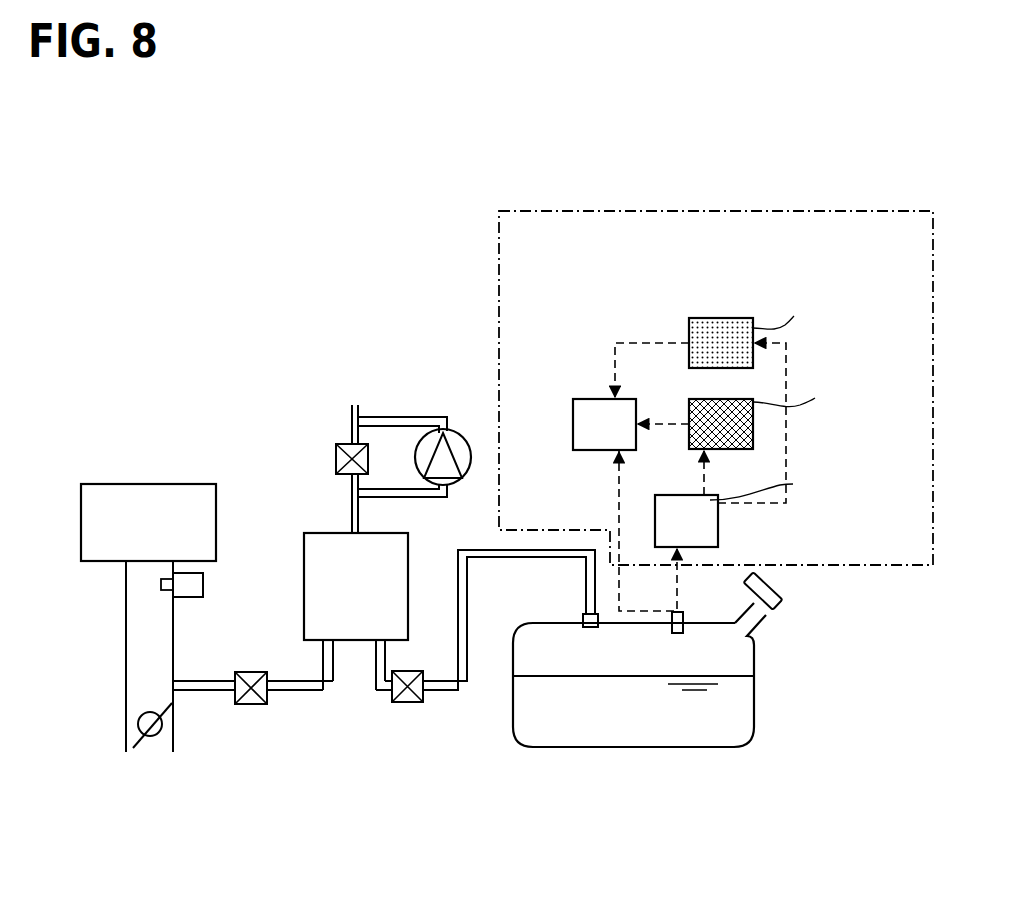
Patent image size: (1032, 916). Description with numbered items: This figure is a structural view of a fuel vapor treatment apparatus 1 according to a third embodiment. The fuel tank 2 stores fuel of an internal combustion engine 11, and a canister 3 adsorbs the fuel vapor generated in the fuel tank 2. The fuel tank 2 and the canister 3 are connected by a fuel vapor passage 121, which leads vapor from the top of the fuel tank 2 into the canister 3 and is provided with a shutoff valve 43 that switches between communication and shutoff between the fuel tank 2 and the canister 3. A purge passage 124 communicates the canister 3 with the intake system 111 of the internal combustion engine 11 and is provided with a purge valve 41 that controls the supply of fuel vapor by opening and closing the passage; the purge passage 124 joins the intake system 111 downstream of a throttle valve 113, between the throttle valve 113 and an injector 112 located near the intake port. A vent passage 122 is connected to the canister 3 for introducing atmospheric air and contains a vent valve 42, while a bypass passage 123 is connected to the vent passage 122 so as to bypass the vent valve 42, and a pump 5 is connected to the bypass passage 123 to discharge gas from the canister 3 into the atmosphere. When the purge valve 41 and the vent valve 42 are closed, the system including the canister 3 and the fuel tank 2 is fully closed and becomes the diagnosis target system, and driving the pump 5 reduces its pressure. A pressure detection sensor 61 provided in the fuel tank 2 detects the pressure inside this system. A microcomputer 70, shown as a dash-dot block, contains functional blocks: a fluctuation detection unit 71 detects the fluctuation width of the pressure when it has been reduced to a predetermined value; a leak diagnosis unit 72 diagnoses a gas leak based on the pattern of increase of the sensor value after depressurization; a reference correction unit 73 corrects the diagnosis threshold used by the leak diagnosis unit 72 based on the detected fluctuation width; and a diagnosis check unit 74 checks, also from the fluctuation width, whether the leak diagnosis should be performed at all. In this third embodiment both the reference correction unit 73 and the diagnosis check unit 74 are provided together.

The fuel vapor treatment apparatus 1 is at (257, 798).
The fuel tank 2 is at (631, 722).
The canister 3 is at (320, 532).
The pump 5 is at (459, 440).
The internal combustion engine 11 is at (81, 521).
The purge valve 41 is at (250, 705).
The vent valve 42 is at (341, 456).
The shutoff valve 43 is at (410, 700).
The pressure detection sensor 61 is at (685, 630).
The microcomputer 70 is at (552, 209).
The fluctuation detection unit 71 is at (710, 520).
The leak diagnosis unit 72 is at (592, 410).
The reference correction unit 73 is at (722, 332).
The diagnosis check unit 74 is at (753, 424).
The intake system 111 is at (140, 618).
The injector 112 is at (194, 584).
The throttle valve 113 is at (143, 748).
The fuel vapor passage 121 is at (447, 685).
The vent passage 122 is at (350, 438).
The bypass passage 123 is at (398, 418).
The purge passage 124 is at (305, 683).